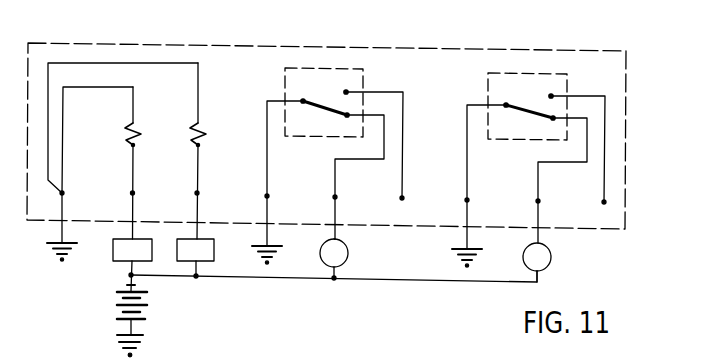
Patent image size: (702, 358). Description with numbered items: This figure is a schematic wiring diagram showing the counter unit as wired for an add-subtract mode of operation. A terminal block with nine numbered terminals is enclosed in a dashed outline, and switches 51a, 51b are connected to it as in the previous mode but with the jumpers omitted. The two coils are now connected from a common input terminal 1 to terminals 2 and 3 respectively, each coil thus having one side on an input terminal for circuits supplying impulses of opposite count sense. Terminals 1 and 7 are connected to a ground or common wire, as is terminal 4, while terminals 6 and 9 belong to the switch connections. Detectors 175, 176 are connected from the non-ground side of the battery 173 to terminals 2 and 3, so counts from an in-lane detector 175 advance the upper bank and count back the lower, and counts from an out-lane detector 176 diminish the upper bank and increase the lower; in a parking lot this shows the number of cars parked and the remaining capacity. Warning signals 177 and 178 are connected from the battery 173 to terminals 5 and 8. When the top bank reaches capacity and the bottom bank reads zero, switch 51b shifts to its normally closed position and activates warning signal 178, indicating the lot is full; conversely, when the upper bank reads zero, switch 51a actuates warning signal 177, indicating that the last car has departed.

The common input terminal 1 is at (67, 194).
The terminal No. 2 is at (139, 197).
The terminal No. 3 is at (203, 197).
The terminal No. 4 is at (273, 201).
The terminal No. 5 is at (341, 202).
The terminal No. 6 is at (408, 205).
The terminal No. 7 is at (473, 206).
The terminal No. 8 is at (544, 207).
The terminal No. 9 is at (610, 209).
The switch 51a is at (365, 74).
The switch 51b is at (568, 79).
The battery 173 is at (140, 319).
The detector 175 is at (113, 251).
The detector 176 is at (208, 262).
The warning signal 177 is at (349, 256).
The warning signal 178 is at (552, 259).